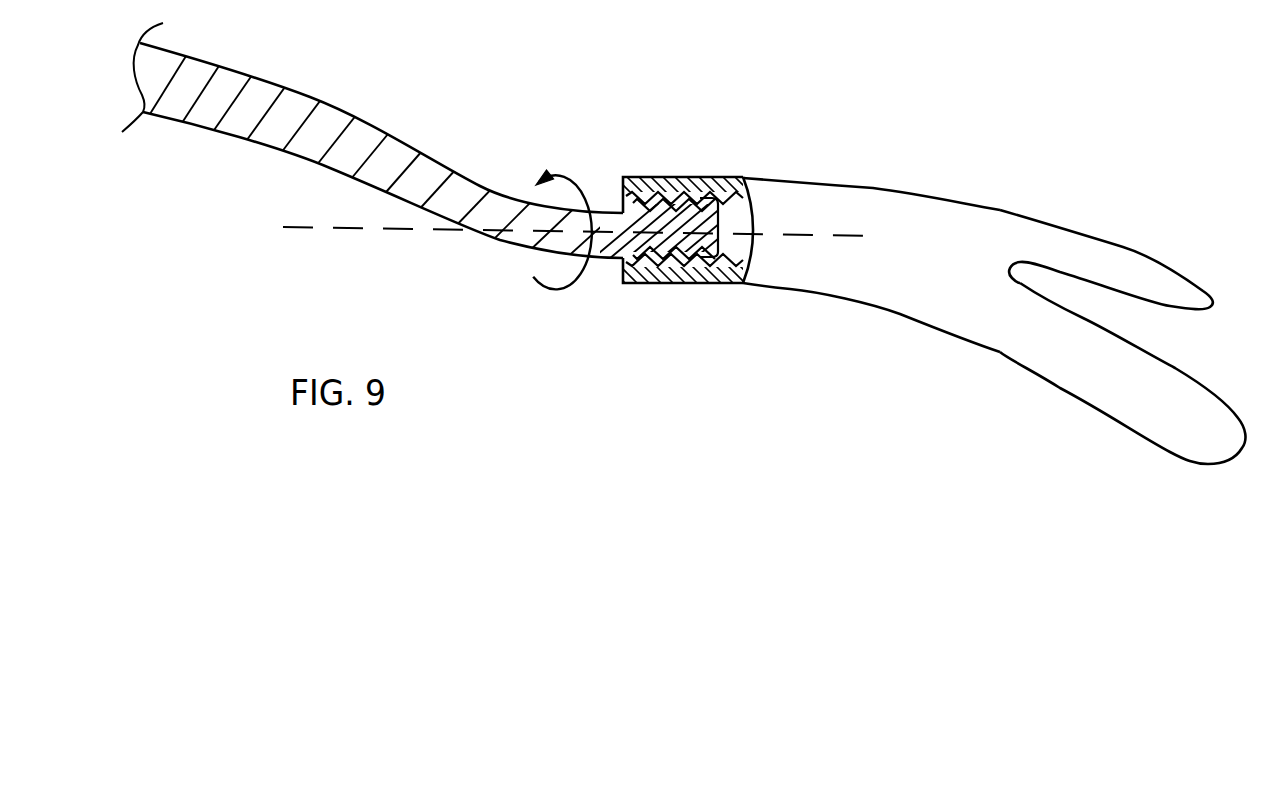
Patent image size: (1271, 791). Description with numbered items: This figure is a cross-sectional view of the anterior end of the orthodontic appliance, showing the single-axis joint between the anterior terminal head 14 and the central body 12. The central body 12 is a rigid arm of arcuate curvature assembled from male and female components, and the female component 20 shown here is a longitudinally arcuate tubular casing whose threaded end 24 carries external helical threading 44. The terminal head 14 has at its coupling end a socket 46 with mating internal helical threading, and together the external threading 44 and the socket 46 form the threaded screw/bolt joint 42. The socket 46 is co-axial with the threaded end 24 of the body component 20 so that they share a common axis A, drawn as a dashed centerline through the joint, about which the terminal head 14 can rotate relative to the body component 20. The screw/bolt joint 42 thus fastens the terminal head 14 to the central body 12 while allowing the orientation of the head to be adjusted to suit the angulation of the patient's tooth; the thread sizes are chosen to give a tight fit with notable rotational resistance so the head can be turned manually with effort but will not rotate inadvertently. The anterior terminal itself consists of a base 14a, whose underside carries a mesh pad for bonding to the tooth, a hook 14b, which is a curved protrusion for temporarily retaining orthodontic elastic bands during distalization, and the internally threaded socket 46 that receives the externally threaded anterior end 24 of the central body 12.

The central body 12 is at (312, 85).
The female component 20 is at (248, 118).
The common axis A is at (390, 229).
The threaded screw/bolt joint 42 is at (685, 172).
The external helical threading 44 is at (662, 222).
The threaded end 24 is at (713, 232).
The socket 46 is at (733, 250).
The terminal head 14 is at (873, 207).
The base 14a is at (1103, 383).
The hook 14b is at (1123, 253).